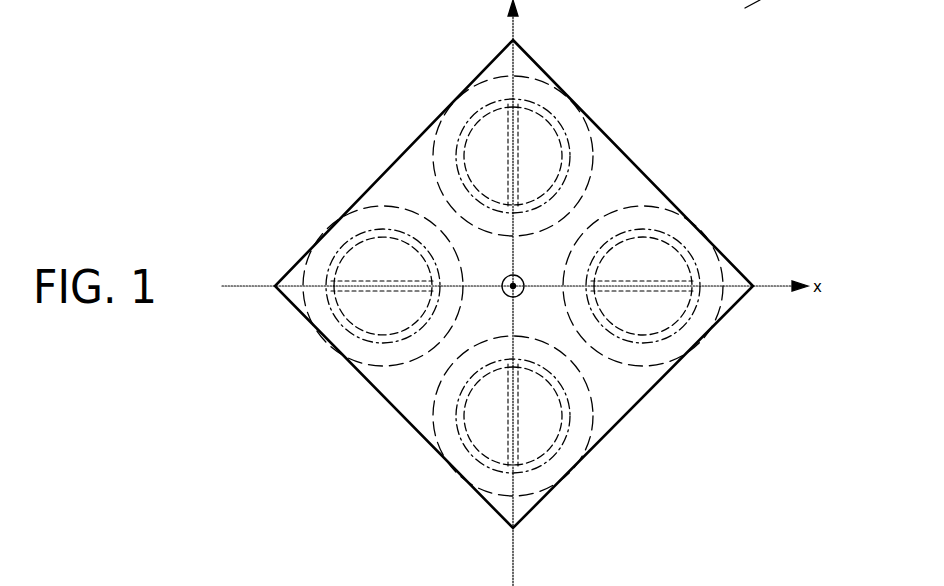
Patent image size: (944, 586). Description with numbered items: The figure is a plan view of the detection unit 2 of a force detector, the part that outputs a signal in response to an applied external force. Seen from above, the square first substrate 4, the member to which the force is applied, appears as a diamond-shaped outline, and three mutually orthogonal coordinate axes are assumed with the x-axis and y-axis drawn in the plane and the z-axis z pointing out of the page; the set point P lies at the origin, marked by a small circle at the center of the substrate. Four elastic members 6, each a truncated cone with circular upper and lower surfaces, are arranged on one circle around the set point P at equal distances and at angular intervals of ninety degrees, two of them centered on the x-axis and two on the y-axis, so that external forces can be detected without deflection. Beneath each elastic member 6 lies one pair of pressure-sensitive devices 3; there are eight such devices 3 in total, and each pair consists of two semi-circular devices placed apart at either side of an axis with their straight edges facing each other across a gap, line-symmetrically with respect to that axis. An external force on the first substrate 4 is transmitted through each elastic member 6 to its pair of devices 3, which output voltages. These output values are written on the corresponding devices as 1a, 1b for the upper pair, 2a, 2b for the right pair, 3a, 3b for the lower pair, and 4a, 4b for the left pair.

The detection unit 2 is at (689, 93).
The pressure-sensitive device 3 is at (520, 293).
The first substrate 4 is at (625, 180).
The elastic member 6 is at (546, 67).
The output value of pressure-sensitive device 1A 1a is at (548, 114).
The output value of pressure-sensitive device 1B 1b is at (471, 114).
The output value of pressure-sensitive device 2A 2a is at (687, 318).
The output value of pressure-sensitive device 2B 2b is at (663, 229).
The output value of pressure-sensitive device 3A 3a is at (488, 416).
The output value of pressure-sensitive device 3B 3b is at (537, 416).
The output value of pressure-sensitive device 4A 4a is at (383, 261).
The output value of pressure-sensitive device 4B 4b is at (383, 310).
The set point P is at (507, 293).
The z-axis z is at (532, 273).